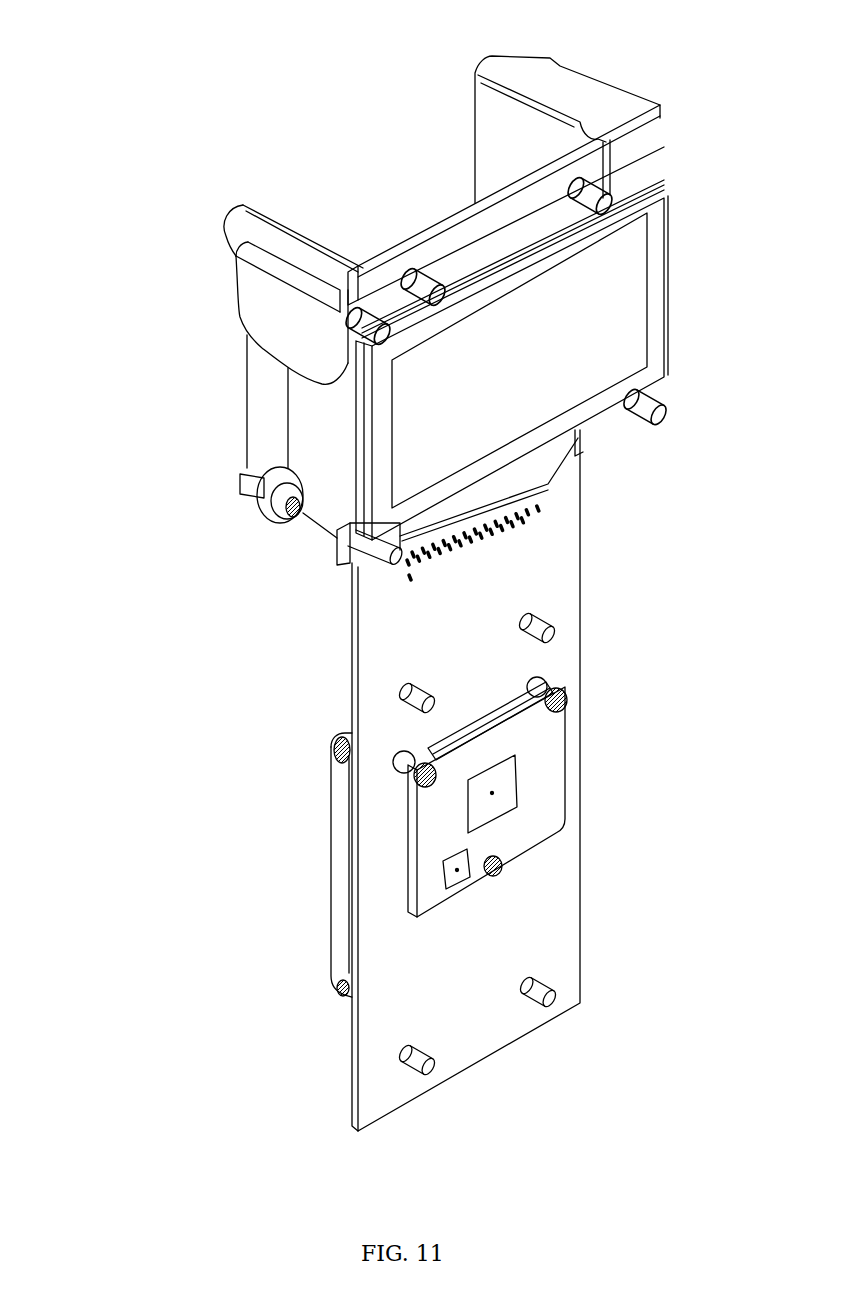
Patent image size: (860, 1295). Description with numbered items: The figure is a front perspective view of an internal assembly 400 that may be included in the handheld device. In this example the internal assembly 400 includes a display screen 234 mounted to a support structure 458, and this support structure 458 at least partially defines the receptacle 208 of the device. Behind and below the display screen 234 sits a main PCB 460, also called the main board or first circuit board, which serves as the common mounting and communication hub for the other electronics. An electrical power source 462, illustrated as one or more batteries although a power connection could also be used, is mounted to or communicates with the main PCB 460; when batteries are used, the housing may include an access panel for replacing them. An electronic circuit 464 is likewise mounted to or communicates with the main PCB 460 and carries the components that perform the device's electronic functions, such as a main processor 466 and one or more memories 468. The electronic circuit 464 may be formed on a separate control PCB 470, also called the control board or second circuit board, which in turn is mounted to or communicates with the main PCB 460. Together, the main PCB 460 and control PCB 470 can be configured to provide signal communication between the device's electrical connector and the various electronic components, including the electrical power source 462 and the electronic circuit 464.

The internal assembly 400 is at (133, 172).
The receptacle 208 is at (372, 186).
The display screen 234 is at (617, 275).
The support structure 458 is at (245, 428).
The main PCB 460 is at (583, 556).
The electrical power source 462 is at (328, 833).
The electronic circuit 464 is at (462, 700).
The main processor 466 is at (505, 797).
The memory 468 is at (453, 878).
The control PCB 470 is at (573, 778).